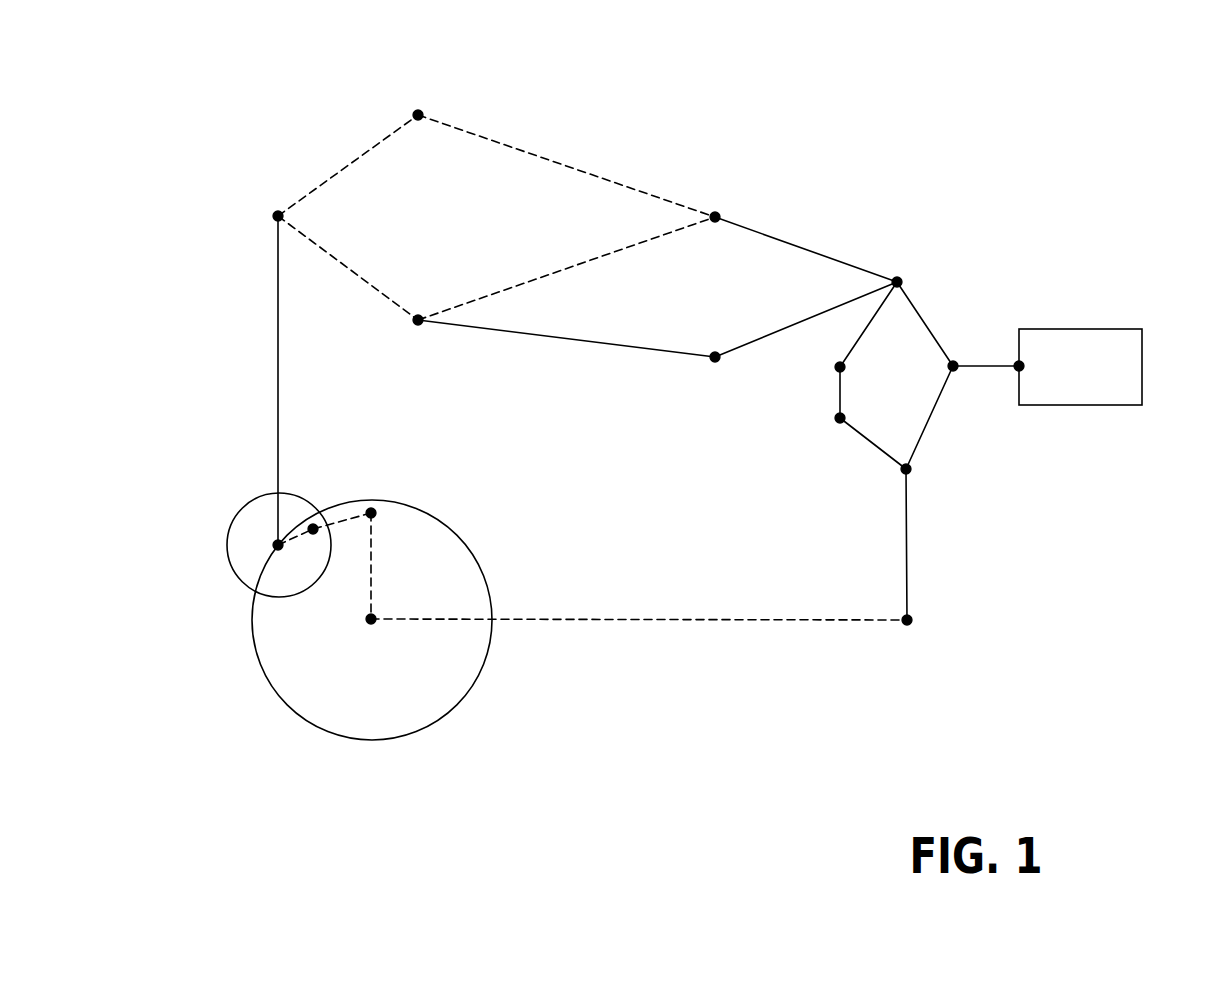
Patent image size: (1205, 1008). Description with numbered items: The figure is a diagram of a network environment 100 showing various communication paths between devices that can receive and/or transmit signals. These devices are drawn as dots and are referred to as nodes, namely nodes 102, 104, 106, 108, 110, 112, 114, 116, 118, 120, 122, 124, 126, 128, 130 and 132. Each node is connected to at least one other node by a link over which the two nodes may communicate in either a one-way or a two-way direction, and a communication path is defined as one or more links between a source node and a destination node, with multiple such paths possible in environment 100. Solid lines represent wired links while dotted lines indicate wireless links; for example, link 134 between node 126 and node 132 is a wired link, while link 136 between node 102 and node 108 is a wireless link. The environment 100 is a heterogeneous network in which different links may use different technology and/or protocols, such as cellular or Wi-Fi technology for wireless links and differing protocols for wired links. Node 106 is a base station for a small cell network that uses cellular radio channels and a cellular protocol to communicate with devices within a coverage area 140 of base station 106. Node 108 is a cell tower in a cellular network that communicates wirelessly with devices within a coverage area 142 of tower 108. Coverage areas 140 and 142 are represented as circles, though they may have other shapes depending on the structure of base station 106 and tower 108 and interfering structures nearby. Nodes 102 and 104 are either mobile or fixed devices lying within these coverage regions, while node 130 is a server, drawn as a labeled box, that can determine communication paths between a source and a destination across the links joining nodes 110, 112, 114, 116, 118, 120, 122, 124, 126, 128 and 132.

The environment 100 is at (907, 140).
The node 102 is at (371, 513).
The node 104 is at (313, 528).
The node 106 is at (278, 545).
The node 108 is at (371, 619).
The node 110 is at (278, 216).
The node 112 is at (418, 115).
The node 114 is at (418, 320).
The node 116 is at (715, 217).
The node 118 is at (715, 357).
The node 120 is at (897, 282).
The node 122 is at (840, 366).
The node 124 is at (840, 417).
The node 126 is at (906, 469).
The node 128 is at (953, 366).
The node 130 is at (1019, 366).
The node 132 is at (907, 620).
The link 134 is at (907, 565).
The link 136 is at (373, 573).
The coverage area 140 is at (235, 517).
The coverage area 142 is at (420, 728).